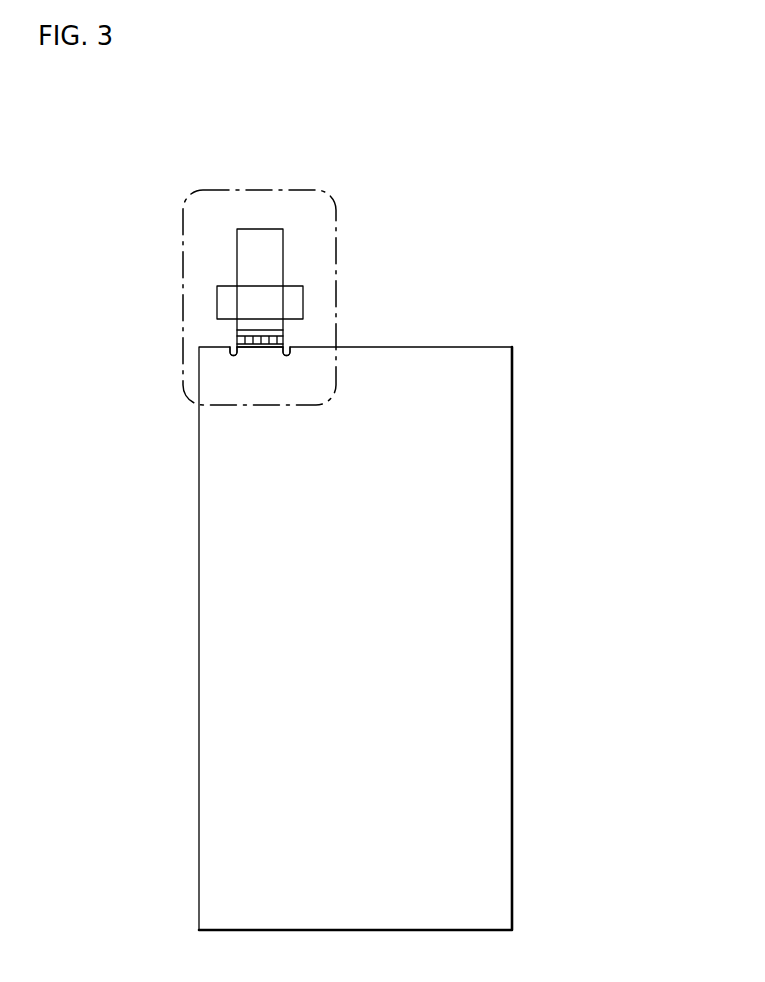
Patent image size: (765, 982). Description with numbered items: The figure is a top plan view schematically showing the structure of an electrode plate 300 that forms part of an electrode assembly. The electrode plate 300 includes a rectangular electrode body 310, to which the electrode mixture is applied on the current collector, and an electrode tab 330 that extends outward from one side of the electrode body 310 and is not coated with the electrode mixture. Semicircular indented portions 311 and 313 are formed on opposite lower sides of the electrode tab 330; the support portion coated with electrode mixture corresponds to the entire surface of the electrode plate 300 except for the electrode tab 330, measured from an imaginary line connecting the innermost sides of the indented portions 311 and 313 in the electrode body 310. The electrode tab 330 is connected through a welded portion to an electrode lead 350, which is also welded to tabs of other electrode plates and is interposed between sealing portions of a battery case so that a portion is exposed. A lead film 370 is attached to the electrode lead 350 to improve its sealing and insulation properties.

The electrode plate 300 is at (389, 634).
The rectangular electrode body 310 is at (355, 638).
The semicircular indented portion 311 is at (232, 360).
The semicircular indented portion 313 is at (288, 360).
The electrode tab 330 is at (272, 352).
The electrode lead 350 is at (245, 257).
The lead film 370 is at (217, 312).